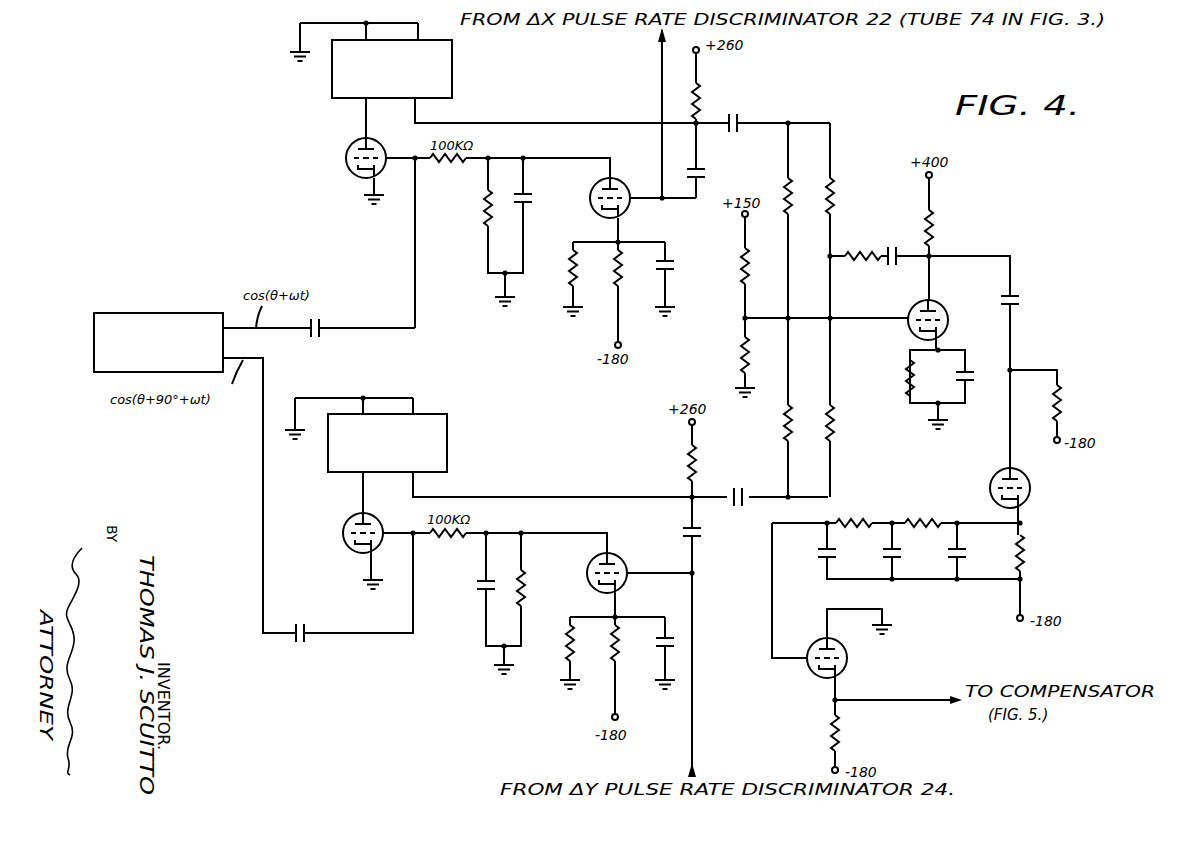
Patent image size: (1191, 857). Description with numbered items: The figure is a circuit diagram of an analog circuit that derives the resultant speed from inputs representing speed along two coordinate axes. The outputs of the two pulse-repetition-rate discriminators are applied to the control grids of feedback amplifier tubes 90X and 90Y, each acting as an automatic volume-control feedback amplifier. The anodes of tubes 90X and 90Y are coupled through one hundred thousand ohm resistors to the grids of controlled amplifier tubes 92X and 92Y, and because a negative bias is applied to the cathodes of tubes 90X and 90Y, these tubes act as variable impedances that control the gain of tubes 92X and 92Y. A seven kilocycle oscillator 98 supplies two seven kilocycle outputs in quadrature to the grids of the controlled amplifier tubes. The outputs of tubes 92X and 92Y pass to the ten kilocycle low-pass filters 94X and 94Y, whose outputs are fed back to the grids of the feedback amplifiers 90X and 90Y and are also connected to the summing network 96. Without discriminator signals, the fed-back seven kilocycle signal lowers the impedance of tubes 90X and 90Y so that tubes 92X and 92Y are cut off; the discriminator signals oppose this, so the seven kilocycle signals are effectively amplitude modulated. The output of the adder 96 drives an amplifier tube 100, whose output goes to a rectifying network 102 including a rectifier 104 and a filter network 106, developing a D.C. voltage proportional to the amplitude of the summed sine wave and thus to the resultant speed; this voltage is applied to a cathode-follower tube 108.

The 10 kc. low-pass filter 94X is at (452, 75).
The controlled amplifier tube 92X is at (350, 167).
The feedback amplifier tube 90X is at (624, 184).
The 7 kc. oscillator 98 is at (162, 313).
The 10 kc. low-pass filter 94Y is at (447, 448).
The controlled amplifier tube 92Y is at (342, 541).
The feedback amplifier tube 90Y is at (622, 558).
The summing network 96 is at (836, 197).
The amplifier tube 100 is at (942, 307).
The rectifying network 102 is at (922, 521).
The rectifier 104 is at (1031, 490).
The filter network 106 is at (967, 555).
The cathode-follower tube 108 is at (848, 661).